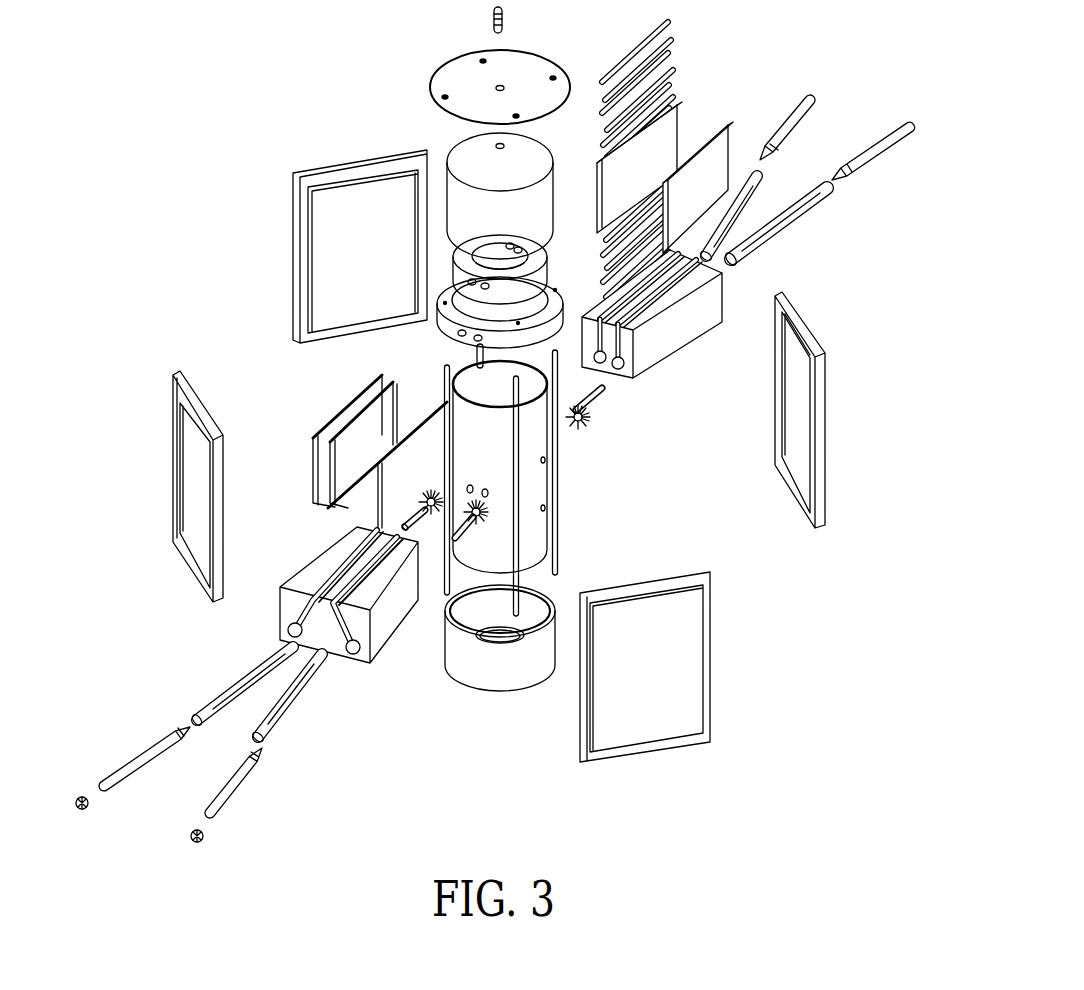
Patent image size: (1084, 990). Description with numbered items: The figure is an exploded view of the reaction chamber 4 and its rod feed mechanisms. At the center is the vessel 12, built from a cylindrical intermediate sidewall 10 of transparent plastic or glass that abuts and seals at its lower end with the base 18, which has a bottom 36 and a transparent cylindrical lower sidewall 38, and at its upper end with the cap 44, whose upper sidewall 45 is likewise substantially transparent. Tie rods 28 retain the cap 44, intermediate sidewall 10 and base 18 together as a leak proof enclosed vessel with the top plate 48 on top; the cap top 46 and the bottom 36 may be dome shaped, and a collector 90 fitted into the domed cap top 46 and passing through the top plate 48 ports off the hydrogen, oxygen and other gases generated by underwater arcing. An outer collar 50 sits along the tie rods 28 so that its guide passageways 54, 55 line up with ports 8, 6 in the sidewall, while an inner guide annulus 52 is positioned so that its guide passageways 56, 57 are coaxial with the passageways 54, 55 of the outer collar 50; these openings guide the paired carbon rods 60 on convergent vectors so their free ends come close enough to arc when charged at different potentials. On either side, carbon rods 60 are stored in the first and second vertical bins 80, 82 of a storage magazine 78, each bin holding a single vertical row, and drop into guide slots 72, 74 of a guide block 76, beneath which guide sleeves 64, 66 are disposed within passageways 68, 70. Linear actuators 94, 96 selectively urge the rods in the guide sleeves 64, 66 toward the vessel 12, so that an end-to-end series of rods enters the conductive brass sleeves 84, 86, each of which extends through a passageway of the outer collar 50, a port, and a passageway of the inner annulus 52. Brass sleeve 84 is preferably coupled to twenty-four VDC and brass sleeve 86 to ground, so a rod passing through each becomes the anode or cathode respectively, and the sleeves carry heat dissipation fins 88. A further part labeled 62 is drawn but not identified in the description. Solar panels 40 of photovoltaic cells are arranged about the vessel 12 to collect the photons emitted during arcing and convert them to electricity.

The reaction chamber 4 is at (160, 238).
The port 6 is at (487, 489).
The port 8 is at (470, 483).
The cylindrical intermediate sidewall 10 is at (537, 486).
The vessel 12 is at (565, 465).
The base 18 is at (462, 665).
The tie rods 28 is at (558, 536).
The bottom 36 is at (490, 680).
The transparent cylindrical lower sidewall 38 is at (522, 673).
The solar panels 40 is at (293, 216).
The cap 44 is at (538, 203).
The upper sidewall 45 is at (466, 202).
The cap top 46 is at (476, 148).
The top plate 48 is at (448, 78).
The outer collar 50 is at (438, 323).
The inner guide annulus 52 is at (516, 253).
The guide passageway 54 is at (460, 337).
The guide passageway 55 is at (477, 358).
The guide passageway 56 is at (467, 283).
The guide passageway 57 is at (487, 290).
The carbon rods 60 is at (672, 25).
The tube 62 is at (683, 330).
The guide sleeve 64 is at (785, 220).
The guide sleeve 66 is at (753, 203).
The passageway 68 is at (290, 637).
The passageway 70 is at (352, 660).
The guide slot 72 is at (316, 635).
The guide slot 74 is at (372, 572).
The guide block 76 is at (661, 314).
The storage magazine 78 is at (681, 131).
The first vertical bin 80 is at (322, 470).
The second vertical bin 82 is at (388, 427).
The brass sleeve 84 is at (404, 516).
The brass sleeve 86 is at (468, 533).
The heat dissipation fins 88 is at (589, 421).
The collector 90 is at (491, 22).
The linear actuator 94 is at (862, 170).
The linear actuator 96 is at (795, 125).